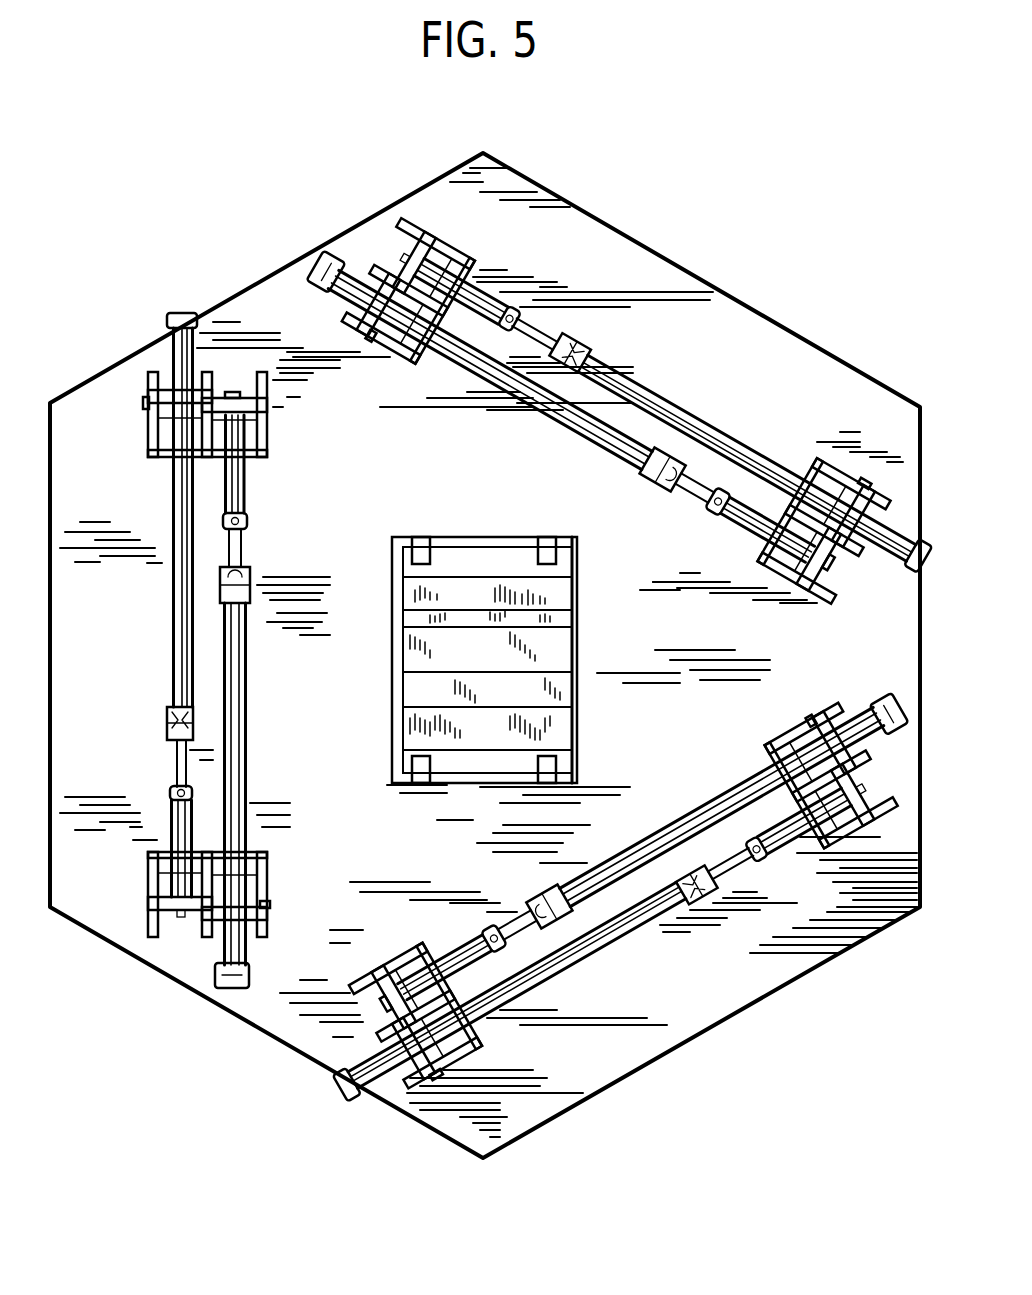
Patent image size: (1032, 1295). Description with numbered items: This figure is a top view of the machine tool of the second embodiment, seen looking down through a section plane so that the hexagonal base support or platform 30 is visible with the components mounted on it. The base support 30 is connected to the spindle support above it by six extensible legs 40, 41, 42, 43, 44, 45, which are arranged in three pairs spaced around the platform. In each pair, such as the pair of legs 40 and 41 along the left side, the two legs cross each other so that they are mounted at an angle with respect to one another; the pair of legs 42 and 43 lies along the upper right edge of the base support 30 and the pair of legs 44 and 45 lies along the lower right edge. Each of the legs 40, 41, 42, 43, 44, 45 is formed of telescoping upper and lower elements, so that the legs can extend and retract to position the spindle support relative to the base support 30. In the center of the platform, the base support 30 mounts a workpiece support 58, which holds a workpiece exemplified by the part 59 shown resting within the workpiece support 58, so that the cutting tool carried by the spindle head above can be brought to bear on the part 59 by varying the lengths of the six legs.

The base support 30 is at (697, 1002).
The extensible leg 40 is at (248, 708).
The extensible leg 41 is at (172, 612).
The extensible leg 42 is at (590, 437).
The extensible leg 43 is at (672, 403).
The extensible leg 44 is at (657, 835).
The extensible leg 45 is at (577, 962).
The workpiece support 58 is at (577, 718).
The part 59 is at (545, 645).